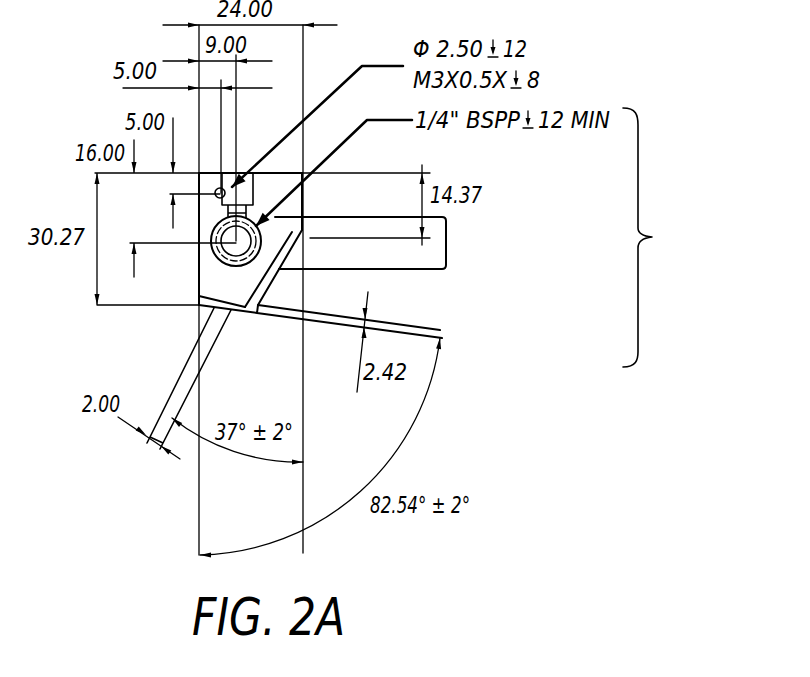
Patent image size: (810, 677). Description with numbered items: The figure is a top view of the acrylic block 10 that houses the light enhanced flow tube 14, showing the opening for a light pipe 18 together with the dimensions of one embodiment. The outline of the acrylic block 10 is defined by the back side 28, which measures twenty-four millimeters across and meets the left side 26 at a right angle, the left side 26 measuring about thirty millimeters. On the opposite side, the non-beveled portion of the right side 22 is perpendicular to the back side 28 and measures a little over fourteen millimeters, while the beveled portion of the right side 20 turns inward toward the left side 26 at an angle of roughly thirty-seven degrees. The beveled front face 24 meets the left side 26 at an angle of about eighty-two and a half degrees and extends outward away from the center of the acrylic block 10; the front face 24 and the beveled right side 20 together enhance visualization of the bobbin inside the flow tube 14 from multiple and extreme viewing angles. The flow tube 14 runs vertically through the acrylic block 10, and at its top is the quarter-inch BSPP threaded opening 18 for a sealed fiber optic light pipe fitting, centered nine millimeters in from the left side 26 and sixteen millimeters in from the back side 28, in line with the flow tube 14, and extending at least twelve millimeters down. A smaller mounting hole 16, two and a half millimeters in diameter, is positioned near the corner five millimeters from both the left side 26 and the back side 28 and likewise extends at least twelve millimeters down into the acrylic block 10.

The acrylic block 10 is at (652, 237).
The flow tube 14 is at (236, 255).
The mounting hole 16 is at (231, 174).
The opening for a light pipe 18 is at (451, 241).
The beveled portion of the right side 20 is at (290, 252).
The non-beveled portion of the right side 22 is at (306, 197).
The front face 24 is at (215, 308).
The left side 26 is at (197, 272).
The back side 28 is at (293, 172).